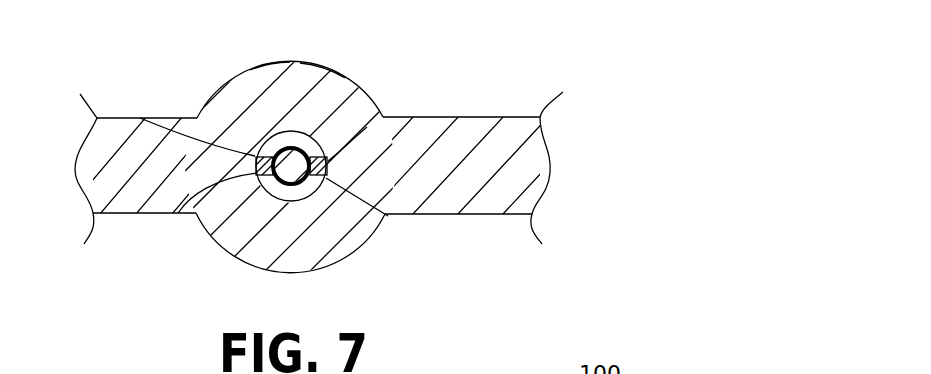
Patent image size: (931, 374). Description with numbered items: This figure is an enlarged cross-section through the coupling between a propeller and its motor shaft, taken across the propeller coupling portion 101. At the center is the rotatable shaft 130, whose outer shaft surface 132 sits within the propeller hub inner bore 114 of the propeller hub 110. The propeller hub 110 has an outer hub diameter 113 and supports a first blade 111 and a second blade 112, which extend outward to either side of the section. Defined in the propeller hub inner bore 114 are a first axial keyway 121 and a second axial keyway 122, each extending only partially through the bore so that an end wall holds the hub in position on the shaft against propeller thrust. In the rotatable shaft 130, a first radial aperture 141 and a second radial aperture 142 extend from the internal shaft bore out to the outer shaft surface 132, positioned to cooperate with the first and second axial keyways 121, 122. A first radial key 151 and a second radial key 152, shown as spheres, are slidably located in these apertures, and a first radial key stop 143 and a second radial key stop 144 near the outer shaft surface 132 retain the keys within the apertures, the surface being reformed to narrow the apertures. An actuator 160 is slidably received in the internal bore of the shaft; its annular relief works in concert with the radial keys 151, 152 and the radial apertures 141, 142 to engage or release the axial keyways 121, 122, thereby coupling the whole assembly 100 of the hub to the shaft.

The cable assembly 100 is at (487, 62).
The propeller coupling portion 101 is at (340, 74).
The propeller hub 110 is at (225, 84).
The first blade 111 is at (82, 181).
The second blade 112 is at (528, 157).
The outer hub diameter 113 is at (265, 62).
The propeller hub inner bore 114 is at (255, 153).
The first axial keyway 121 is at (388, 216).
The second axial keyway 122 is at (178, 213).
The rotatable shaft 130 is at (316, 190).
The outer shaft surface 132 is at (262, 193).
The first radial aperture 141 is at (367, 127).
The second radial aperture 142 is at (140, 118).
The first radial key stop 143 is at (327, 160).
The second radial key stop 144 is at (258, 187).
The first radial key 151 is at (330, 175).
The second radial key 152 is at (252, 177).
The actuator 160 is at (296, 201).